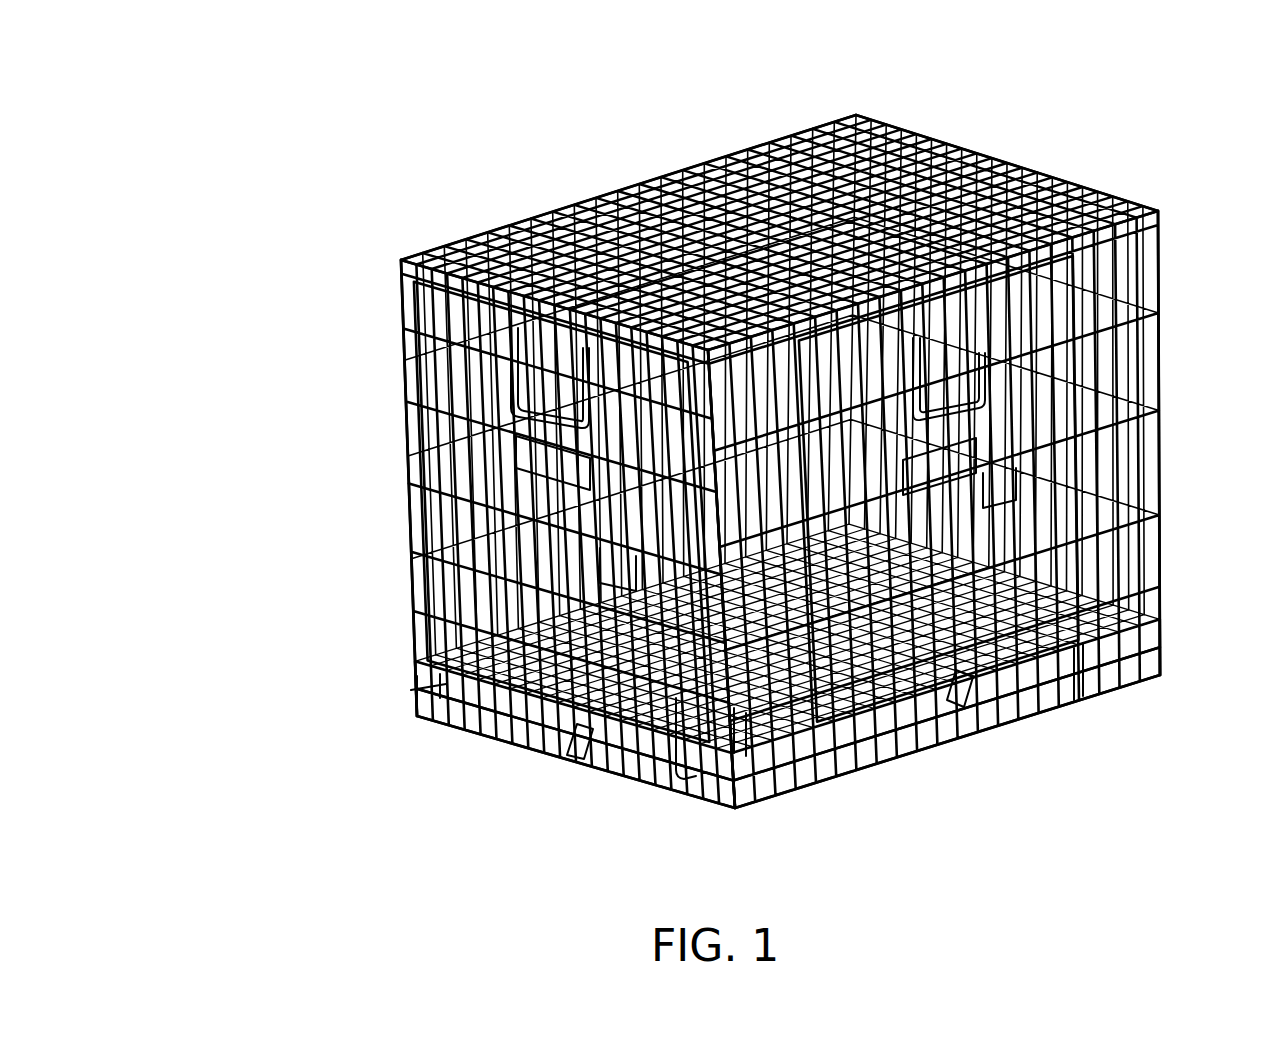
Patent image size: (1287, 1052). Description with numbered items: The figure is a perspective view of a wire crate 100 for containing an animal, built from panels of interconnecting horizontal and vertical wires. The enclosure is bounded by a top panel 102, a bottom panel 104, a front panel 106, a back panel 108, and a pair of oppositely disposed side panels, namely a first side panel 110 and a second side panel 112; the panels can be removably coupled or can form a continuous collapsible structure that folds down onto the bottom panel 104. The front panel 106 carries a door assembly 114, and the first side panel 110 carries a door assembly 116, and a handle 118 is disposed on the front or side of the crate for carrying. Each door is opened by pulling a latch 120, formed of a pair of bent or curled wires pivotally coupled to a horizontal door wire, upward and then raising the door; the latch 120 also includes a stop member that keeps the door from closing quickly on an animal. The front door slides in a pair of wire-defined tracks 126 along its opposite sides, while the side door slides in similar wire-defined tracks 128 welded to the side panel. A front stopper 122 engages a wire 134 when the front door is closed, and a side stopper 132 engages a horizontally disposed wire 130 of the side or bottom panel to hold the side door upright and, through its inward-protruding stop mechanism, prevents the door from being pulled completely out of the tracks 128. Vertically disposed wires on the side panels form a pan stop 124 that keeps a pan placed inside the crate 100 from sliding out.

The wire crate 100 is at (188, 162).
The top panel 102 is at (660, 185).
The bottom panel 104 is at (790, 780).
The front panel 106 is at (1125, 320).
The back panel 108 is at (440, 375).
The first side panel 110 is at (420, 604).
The second side panel 112 is at (1168, 374).
The door assembly 114 is at (1080, 565).
The door assembly 116 is at (445, 472).
The handle 118 is at (505, 392).
The latch 120 is at (592, 548).
The front stopper 122 is at (958, 700).
The pan stop 124 is at (510, 705).
The tracks 126 is at (1070, 680).
The tracks 128 is at (672, 760).
The horizontally disposed wire 130 is at (410, 680).
The side stopper 132 is at (565, 740).
The wire 134 is at (730, 735).